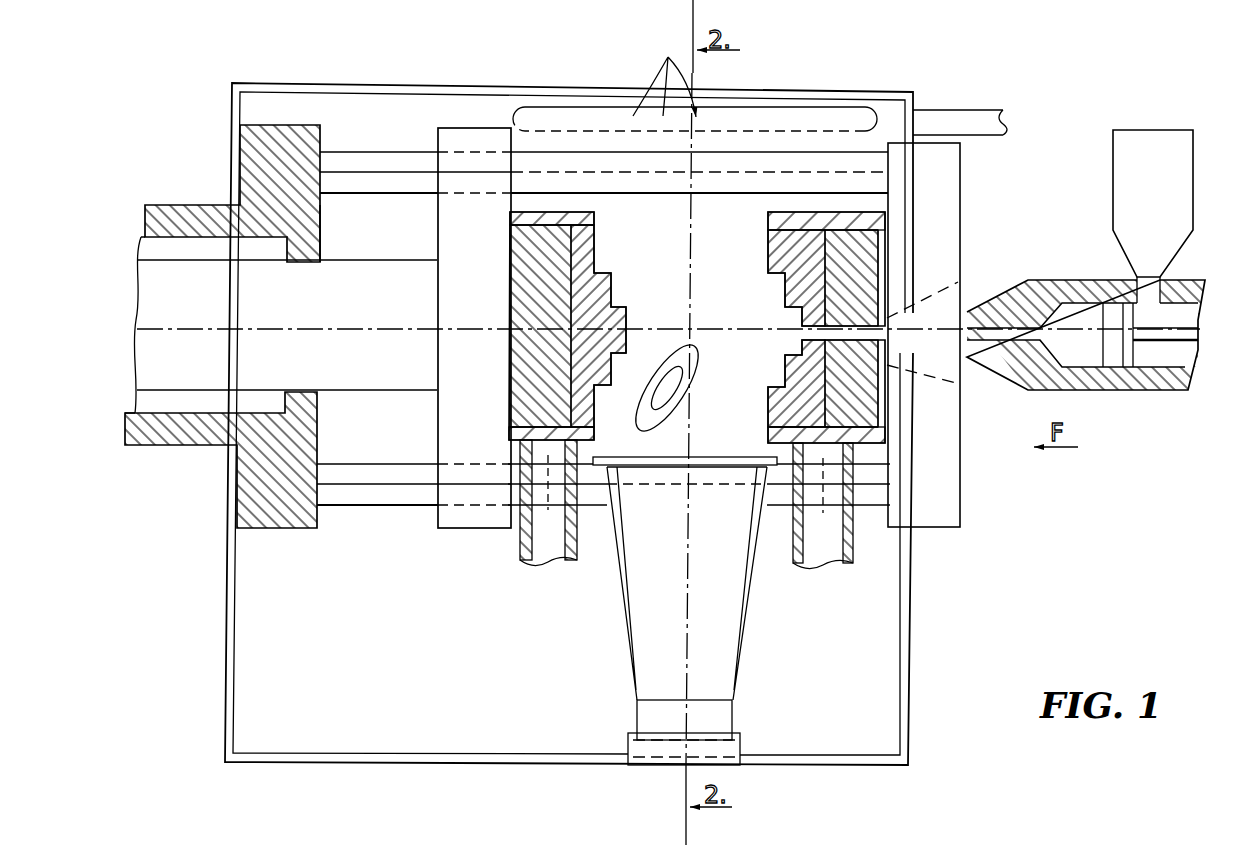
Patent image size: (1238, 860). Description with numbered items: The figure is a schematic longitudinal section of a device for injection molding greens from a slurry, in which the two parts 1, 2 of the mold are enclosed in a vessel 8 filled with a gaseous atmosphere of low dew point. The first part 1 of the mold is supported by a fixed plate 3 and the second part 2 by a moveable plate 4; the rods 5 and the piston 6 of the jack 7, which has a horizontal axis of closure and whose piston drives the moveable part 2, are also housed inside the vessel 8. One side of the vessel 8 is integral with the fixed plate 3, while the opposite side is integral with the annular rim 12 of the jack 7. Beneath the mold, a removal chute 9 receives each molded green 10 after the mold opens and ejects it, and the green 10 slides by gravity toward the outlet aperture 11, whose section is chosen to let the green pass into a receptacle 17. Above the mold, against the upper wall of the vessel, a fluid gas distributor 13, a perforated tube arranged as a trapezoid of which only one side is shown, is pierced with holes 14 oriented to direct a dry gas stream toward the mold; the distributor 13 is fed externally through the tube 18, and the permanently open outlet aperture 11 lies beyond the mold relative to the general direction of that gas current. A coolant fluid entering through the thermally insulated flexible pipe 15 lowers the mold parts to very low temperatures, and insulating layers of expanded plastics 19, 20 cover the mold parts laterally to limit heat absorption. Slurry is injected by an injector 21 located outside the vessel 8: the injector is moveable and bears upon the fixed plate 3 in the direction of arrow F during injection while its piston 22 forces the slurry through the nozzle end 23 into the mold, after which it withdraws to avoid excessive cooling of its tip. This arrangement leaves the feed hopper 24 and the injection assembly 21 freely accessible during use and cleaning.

The first part of the mold 1 is at (781, 243).
The second part of the mold 2 is at (590, 247).
The fixed plate 3 is at (950, 203).
The moveable plate 4 is at (438, 216).
The rods 5 is at (430, 172).
The piston 6 is at (344, 392).
The jack 7 is at (181, 204).
The vessel 8 is at (224, 637).
The removal chute 9 is at (617, 611).
The molded green 10 is at (700, 387).
The outlet aperture 11 is at (635, 712).
The annular rim 12 is at (323, 238).
The fluid gas distributor 13 is at (568, 115).
The holes 14 is at (664, 71).
The entry aperture for coolant fluid 15 is at (853, 547).
The receptacle 17 is at (743, 768).
The tube 18 is at (957, 109).
The insulating layer of expanded plastics 19 is at (848, 212).
The insulating layer of expanded plastics 20 is at (553, 212).
The injector 21 is at (1040, 278).
The piston 22 is at (1118, 356).
The nozzle tip opening 23 is at (985, 330).
The feed hopper 24 is at (1165, 142).